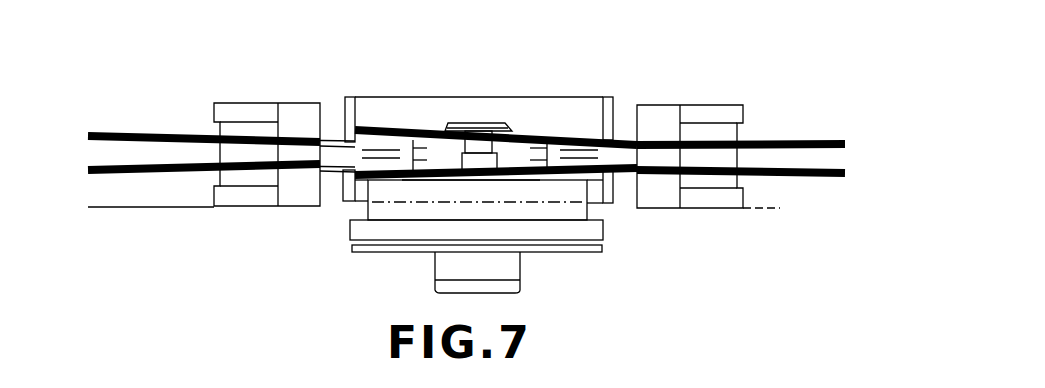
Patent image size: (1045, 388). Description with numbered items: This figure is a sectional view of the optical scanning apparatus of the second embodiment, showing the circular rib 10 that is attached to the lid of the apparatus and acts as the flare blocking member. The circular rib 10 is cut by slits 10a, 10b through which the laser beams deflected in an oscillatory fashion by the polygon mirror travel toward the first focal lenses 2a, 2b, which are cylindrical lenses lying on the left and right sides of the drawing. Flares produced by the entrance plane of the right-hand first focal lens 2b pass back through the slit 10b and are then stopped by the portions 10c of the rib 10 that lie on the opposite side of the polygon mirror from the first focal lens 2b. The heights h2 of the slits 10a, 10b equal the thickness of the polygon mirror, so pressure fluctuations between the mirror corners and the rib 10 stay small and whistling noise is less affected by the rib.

The first focal lens 2a is at (318, 102).
The first focal lens 2b is at (672, 113).
The circular rib 10 is at (521, 90).
The slit 10a is at (397, 132).
The slit 10b is at (597, 143).
The portions of the rib 10c is at (357, 112).
The height of the slits h2 is at (303, 183).